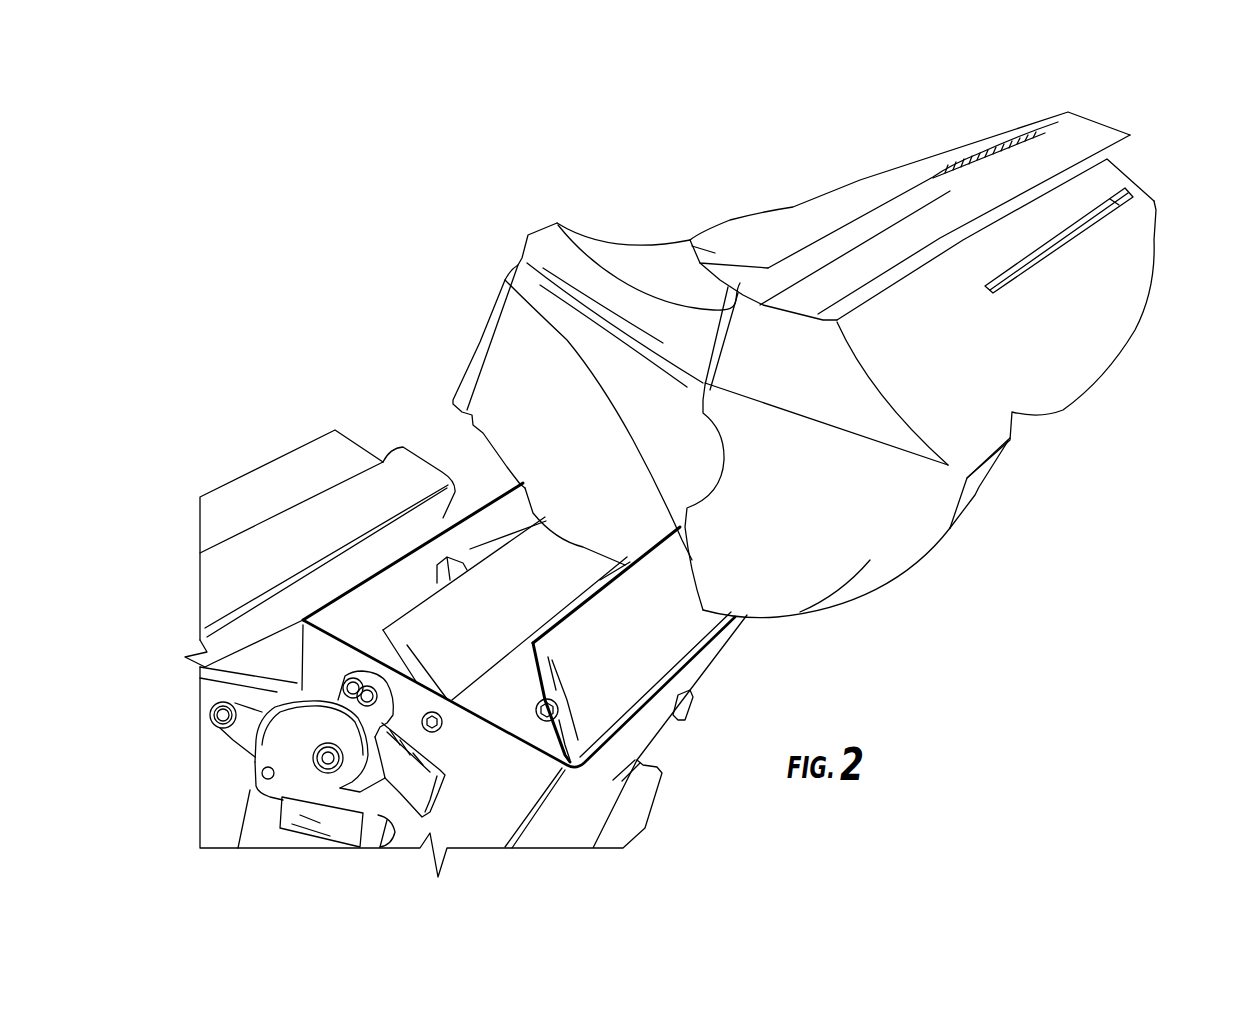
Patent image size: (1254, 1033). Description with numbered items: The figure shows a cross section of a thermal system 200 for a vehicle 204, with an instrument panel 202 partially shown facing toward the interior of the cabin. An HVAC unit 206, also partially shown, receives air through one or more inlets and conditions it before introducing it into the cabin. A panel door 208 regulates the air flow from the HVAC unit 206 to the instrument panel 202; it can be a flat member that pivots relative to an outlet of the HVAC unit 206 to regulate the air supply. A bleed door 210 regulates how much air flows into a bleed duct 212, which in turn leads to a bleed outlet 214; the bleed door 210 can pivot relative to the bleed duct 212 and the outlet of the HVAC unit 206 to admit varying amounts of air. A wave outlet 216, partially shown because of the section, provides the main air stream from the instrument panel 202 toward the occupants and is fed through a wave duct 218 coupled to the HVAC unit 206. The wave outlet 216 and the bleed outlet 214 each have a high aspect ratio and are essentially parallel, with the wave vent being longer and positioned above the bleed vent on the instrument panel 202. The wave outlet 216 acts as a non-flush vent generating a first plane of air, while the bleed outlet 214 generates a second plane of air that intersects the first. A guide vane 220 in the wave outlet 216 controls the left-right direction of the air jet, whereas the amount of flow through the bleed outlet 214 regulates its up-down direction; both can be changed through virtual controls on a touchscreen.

The thermal system 200 is at (396, 143).
The instrument panel 202 is at (1137, 268).
The vehicle 204 is at (1108, 293).
The HVAC unit 206 is at (353, 437).
The panel door 208 is at (478, 667).
The bleed door 210 is at (603, 592).
The bleed duct 212 is at (868, 560).
The bleed outlet 214 is at (1118, 201).
The wave outlet 216 is at (956, 189).
The wave duct 218 is at (537, 350).
The guide vane 220 is at (1040, 132).